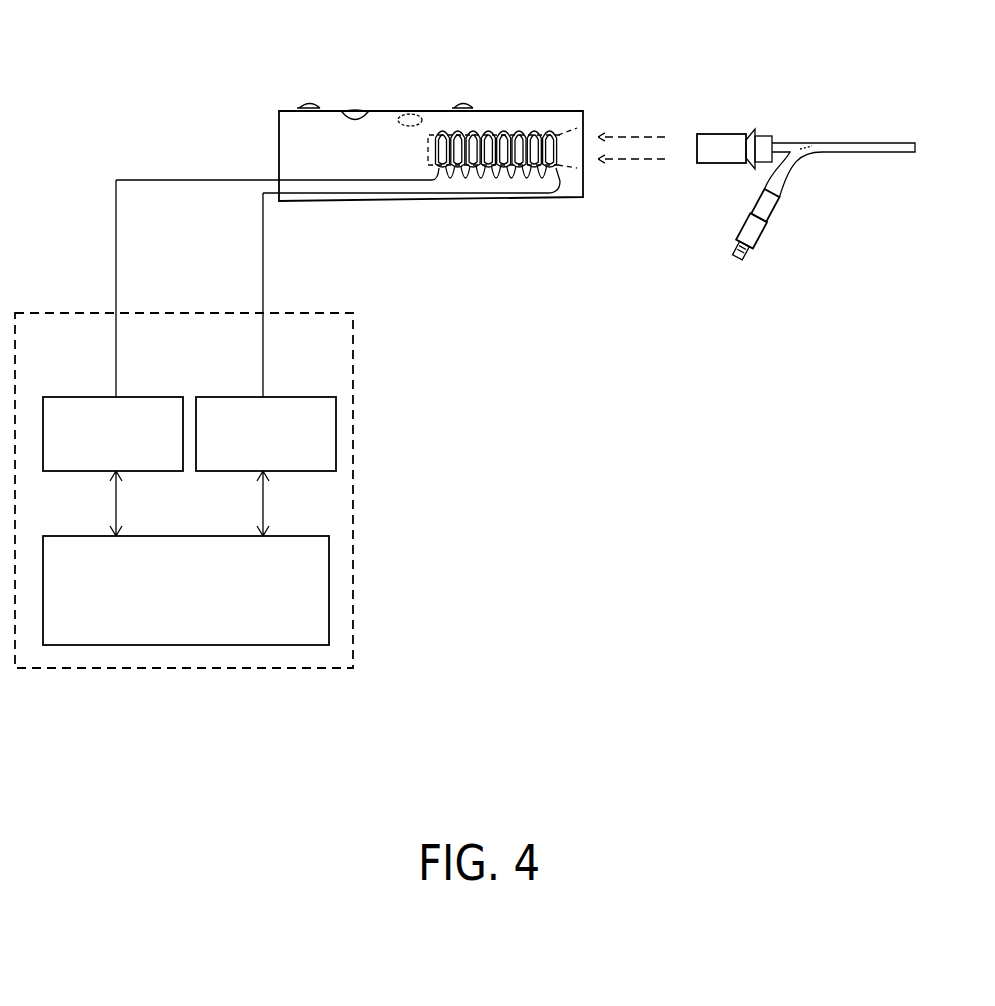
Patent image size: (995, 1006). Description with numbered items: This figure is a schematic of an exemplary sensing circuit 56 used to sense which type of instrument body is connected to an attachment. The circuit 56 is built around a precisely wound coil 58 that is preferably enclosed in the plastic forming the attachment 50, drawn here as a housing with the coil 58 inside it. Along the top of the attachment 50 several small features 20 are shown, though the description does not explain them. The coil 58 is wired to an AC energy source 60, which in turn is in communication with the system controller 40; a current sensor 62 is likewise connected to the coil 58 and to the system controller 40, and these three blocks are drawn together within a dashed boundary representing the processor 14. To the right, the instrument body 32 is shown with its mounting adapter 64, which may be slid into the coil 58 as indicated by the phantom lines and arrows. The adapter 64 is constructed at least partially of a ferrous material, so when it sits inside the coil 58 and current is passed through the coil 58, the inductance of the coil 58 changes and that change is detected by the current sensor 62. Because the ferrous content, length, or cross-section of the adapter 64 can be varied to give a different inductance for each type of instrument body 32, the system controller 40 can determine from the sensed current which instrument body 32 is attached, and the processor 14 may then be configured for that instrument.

The processor 14 is at (353, 539).
The electrical contacts 20 is at (308, 104).
The instrument body 32 is at (850, 140).
The system controller 40 is at (292, 595).
The attachment 50 is at (493, 111).
The sensing circuit 56 is at (535, 130).
The coil 58 is at (441, 131).
The AC energy source 60 is at (125, 443).
The current sensor 62 is at (275, 442).
The mounting adapter 64 is at (732, 134).